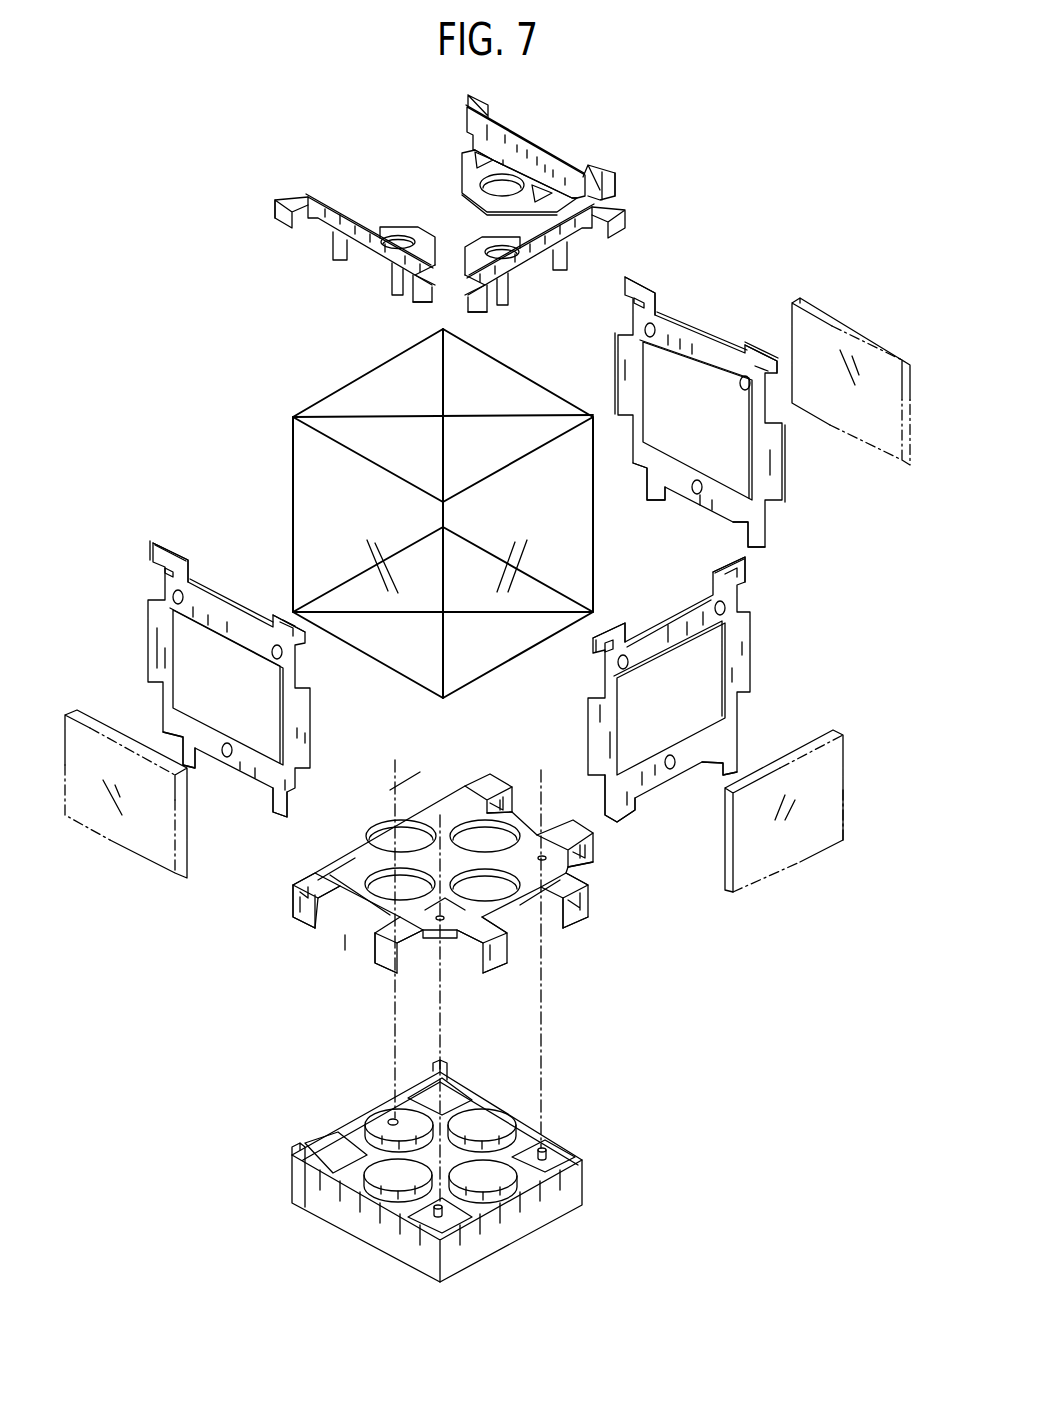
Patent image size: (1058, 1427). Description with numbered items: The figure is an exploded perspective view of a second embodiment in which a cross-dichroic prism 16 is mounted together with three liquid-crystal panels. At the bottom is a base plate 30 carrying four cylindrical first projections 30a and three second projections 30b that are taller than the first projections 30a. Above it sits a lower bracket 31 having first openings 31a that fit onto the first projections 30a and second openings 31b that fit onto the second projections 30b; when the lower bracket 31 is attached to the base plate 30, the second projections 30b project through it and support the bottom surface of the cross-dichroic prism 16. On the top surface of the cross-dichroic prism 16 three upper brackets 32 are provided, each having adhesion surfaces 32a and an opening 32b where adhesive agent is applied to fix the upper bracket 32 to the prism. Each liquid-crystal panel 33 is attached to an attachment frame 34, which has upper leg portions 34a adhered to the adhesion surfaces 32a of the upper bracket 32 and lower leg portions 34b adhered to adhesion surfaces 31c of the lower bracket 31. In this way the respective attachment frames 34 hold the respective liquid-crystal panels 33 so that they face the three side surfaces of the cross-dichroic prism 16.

The cross-dichroic prism 16 is at (312, 492).
The base plate 30 is at (470, 1243).
The first projections 30a is at (377, 1123).
The second projections 30b is at (390, 1120).
The lower bracket 31 is at (340, 847).
The first openings 31a is at (473, 833).
The second openings 31b is at (546, 860).
The adhesion surfaces 31c is at (295, 908).
The upper brackets 32 is at (520, 136).
The adhesion surfaces 32a is at (280, 219).
The opening 32b is at (490, 183).
The liquid-crystal panel 33 is at (880, 442).
The attachment frame 34 is at (625, 371).
The upper leg portions 34a is at (650, 283).
The lower leg portions 34b is at (654, 492).